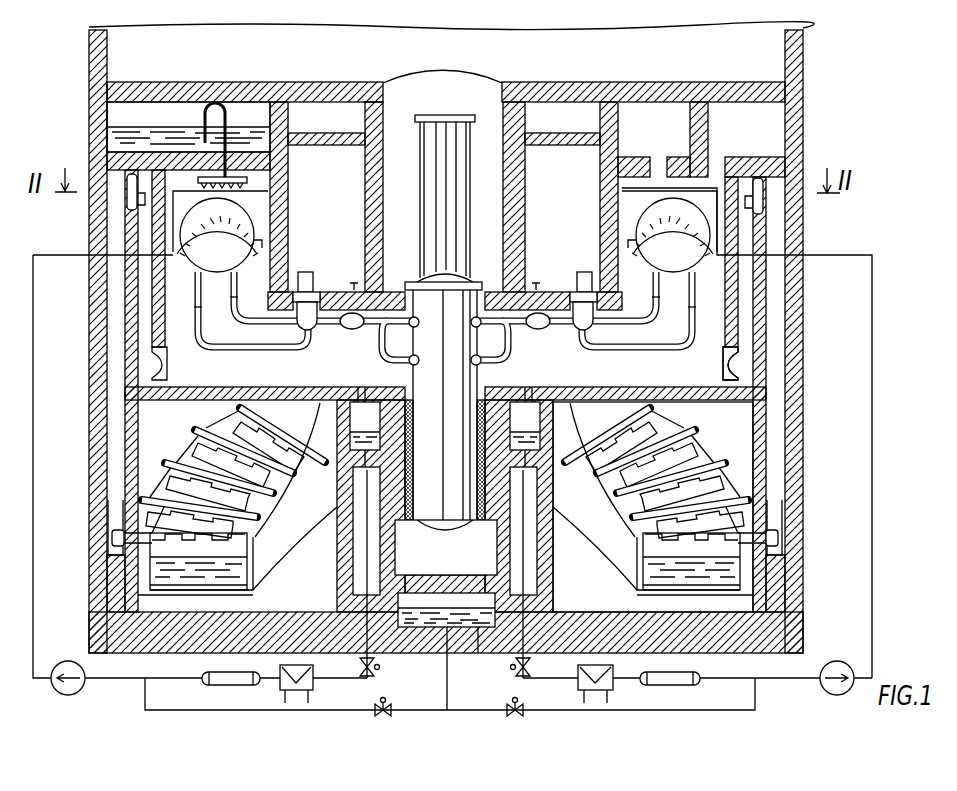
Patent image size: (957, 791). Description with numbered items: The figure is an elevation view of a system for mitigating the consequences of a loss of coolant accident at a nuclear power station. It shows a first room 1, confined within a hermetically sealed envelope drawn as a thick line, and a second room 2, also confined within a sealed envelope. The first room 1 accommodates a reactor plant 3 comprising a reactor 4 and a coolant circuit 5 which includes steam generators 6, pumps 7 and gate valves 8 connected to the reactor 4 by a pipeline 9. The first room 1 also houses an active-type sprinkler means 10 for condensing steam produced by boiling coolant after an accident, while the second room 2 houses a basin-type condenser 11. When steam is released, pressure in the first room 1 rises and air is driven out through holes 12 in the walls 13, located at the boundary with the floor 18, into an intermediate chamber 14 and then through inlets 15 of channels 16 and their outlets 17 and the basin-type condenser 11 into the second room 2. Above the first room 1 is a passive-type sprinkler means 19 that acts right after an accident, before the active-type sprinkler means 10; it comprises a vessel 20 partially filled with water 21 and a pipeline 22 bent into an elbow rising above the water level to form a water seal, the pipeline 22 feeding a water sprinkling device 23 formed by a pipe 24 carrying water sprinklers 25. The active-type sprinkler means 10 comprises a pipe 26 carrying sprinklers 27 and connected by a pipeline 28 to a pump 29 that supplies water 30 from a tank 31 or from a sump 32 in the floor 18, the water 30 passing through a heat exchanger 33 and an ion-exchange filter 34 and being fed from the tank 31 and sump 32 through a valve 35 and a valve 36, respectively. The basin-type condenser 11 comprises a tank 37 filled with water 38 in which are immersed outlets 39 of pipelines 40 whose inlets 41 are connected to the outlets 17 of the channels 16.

The first room 1 is at (738, 352).
The second room 2 is at (735, 444).
The reactor plant 3 is at (392, 381).
The reactor 4 is at (470, 378).
The coolant circuit 5 is at (235, 360).
The steam generators 6 is at (193, 250).
The pumps 7 is at (315, 323).
The gate valves 8 is at (353, 283).
The pipeline 9 is at (277, 323).
The active-type sprinkler means 10 is at (277, 225).
The basin-type condenser 11 is at (282, 569).
The holes 12 is at (160, 357).
The walls 13 is at (155, 333).
The intermediate chamber 14 is at (143, 295).
The inlets 15 is at (120, 203).
The channels 16 is at (112, 383).
The outlets 17 is at (120, 546).
The floor 18 is at (174, 400).
The passive-type sprinkler means 19 is at (256, 116).
The vessel 20 is at (136, 131).
The water 21 is at (130, 117).
The pipeline 22 is at (217, 110).
The water sprinkling device 23 is at (252, 165).
The pipe 24 is at (247, 180).
The water sprinklers 25 is at (240, 187).
The pipe 26 is at (243, 203).
The sprinklers 27 is at (226, 188).
The pipeline 28 is at (36, 458).
The pump 29 is at (58, 689).
The water 30 is at (433, 628).
The tank 31 is at (478, 628).
The sump 32 is at (343, 398).
The heat exchanger 33 is at (313, 686).
The ion-exchange filter 34 is at (215, 680).
The valve 35 is at (388, 702).
The valve 36 is at (379, 667).
The tank 37 is at (297, 520).
The water 38 is at (160, 535).
The outlets 39 is at (253, 583).
The pipelines 40 is at (152, 562).
The inlets 41 is at (112, 533).